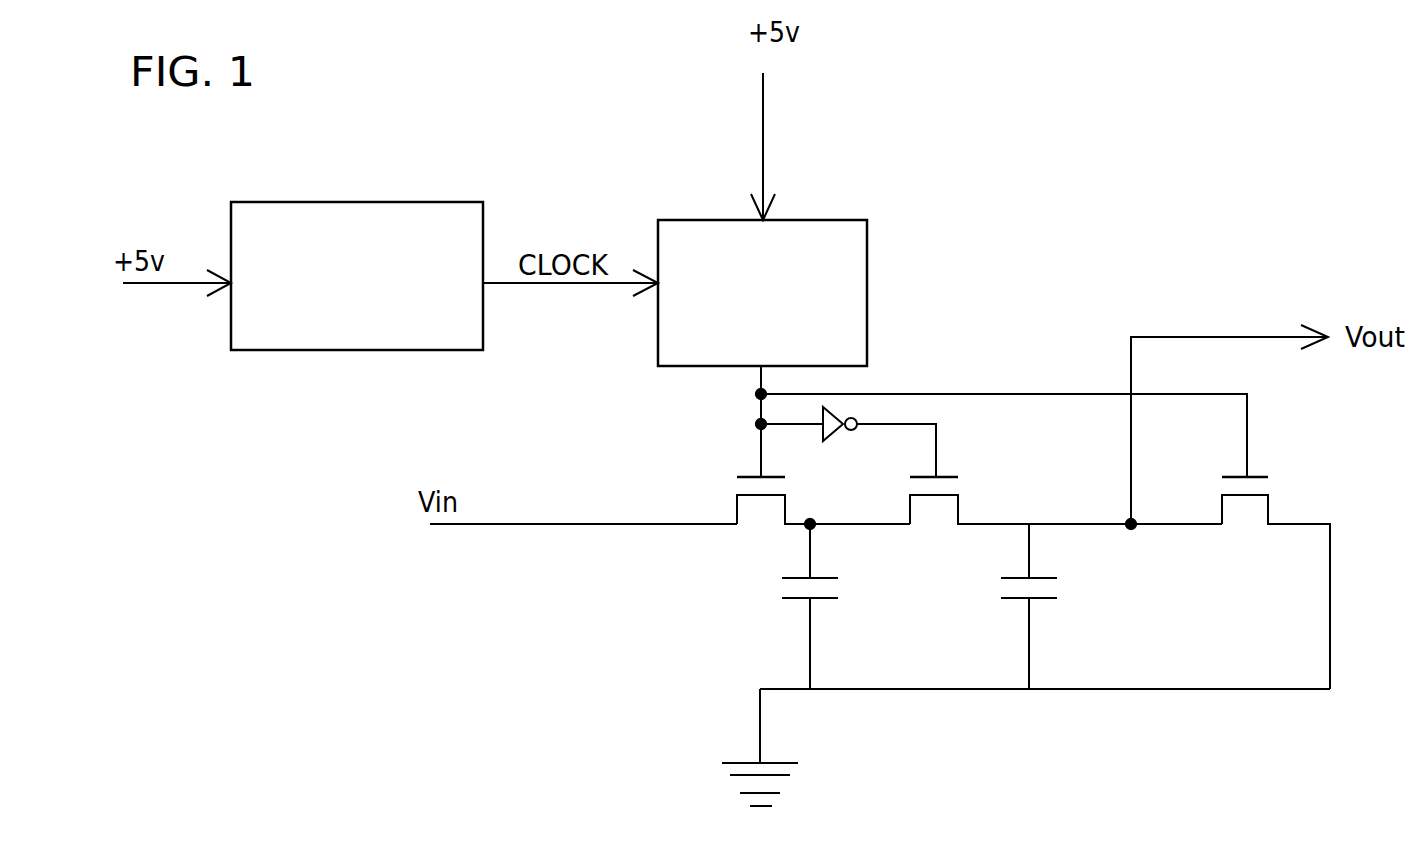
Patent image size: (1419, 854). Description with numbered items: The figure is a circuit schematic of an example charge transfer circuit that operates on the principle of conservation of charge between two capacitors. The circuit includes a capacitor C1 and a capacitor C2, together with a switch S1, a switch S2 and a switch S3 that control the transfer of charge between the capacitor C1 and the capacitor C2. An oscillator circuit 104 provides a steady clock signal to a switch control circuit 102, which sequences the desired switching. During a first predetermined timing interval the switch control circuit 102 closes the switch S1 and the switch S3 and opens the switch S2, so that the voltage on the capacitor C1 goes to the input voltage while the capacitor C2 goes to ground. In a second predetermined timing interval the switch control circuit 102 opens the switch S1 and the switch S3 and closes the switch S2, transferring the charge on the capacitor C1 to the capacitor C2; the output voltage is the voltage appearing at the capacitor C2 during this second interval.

The oscillator circuit 104 is at (483, 202).
The switch control circuit 102 is at (867, 257).
The switch S1 is at (786, 507).
The switch S2 is at (960, 507).
The switch S3 is at (1273, 503).
The capacitor C1 is at (822, 606).
The capacitor C2 is at (1037, 606).